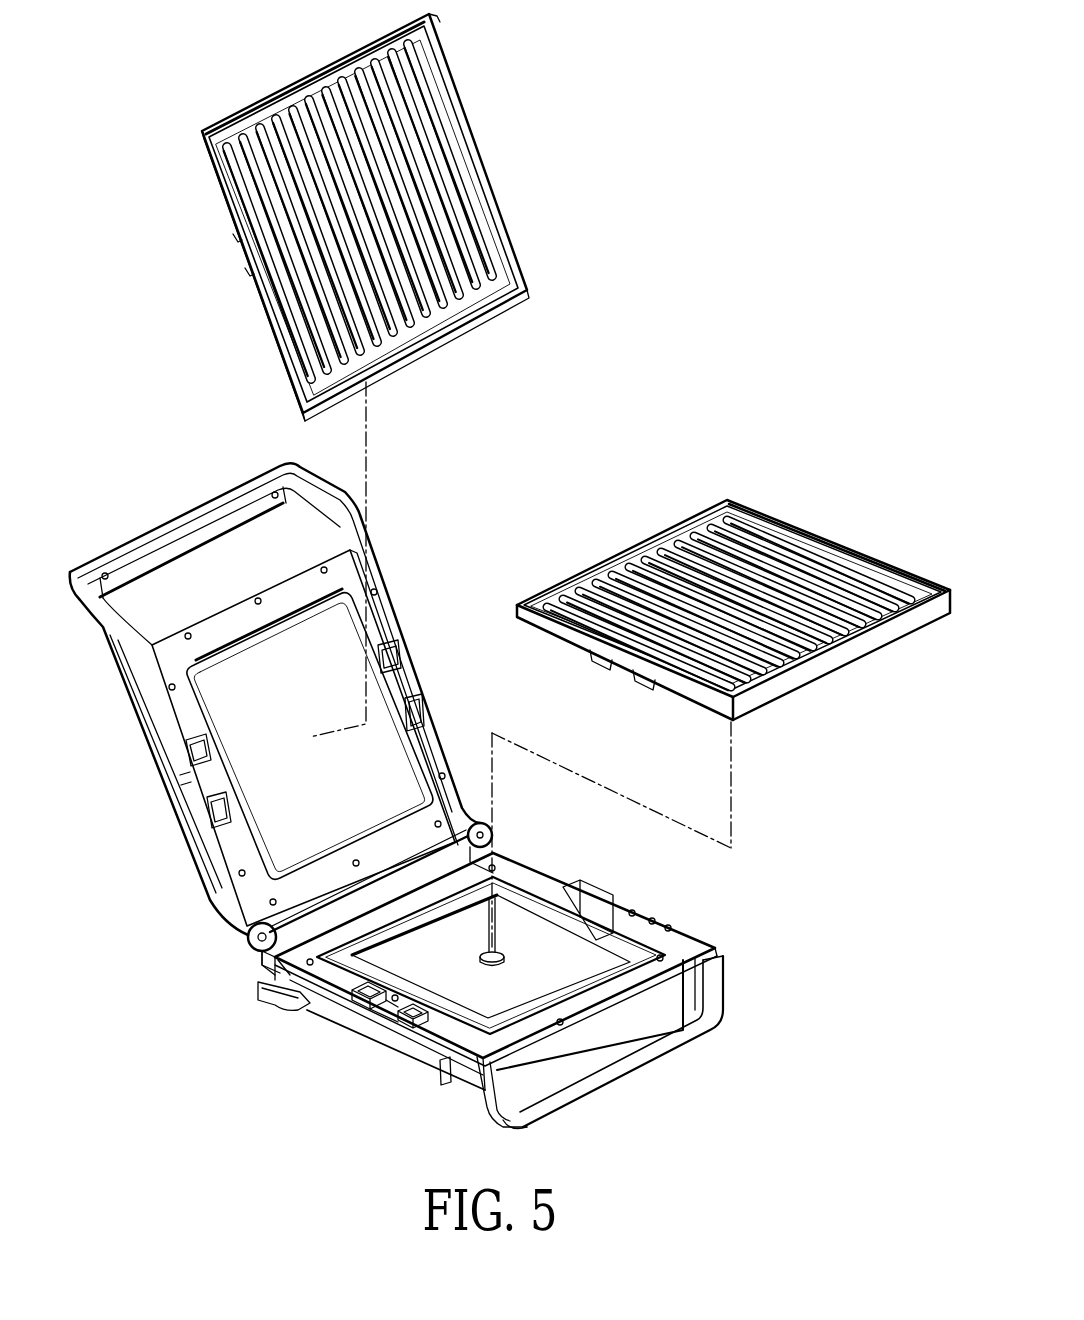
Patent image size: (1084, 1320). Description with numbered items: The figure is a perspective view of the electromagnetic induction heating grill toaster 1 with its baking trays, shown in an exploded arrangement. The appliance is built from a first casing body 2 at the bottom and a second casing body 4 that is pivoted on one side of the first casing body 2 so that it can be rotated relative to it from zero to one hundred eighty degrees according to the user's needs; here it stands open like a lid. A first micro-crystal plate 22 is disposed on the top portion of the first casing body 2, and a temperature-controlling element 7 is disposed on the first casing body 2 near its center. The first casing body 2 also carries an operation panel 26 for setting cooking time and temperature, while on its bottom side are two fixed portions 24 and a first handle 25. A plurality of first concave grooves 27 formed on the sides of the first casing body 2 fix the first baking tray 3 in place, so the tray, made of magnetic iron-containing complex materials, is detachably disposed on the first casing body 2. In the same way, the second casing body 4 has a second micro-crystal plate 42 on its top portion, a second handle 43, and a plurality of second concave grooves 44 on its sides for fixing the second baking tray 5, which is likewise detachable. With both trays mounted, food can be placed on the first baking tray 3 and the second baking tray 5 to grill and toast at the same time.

The electromagnetic induction heating grill toaster 1 is at (440, 513).
The first casing body 2 is at (509, 967).
The first baking tray 3 is at (828, 547).
The second casing body 4 is at (278, 691).
The second baking tray 5 is at (482, 148).
The temperature-controlling element 7 is at (497, 946).
The first micro-crystal plate 22 is at (273, 977).
The fixed portions 24 is at (288, 997).
The first handle 25 is at (647, 1050).
The operation panel 26 is at (683, 937).
The first concave grooves 27 is at (360, 1003).
The second micro-crystal plate 42 is at (234, 704).
The second handle 43 is at (195, 532).
The second concave grooves 44 is at (190, 755).